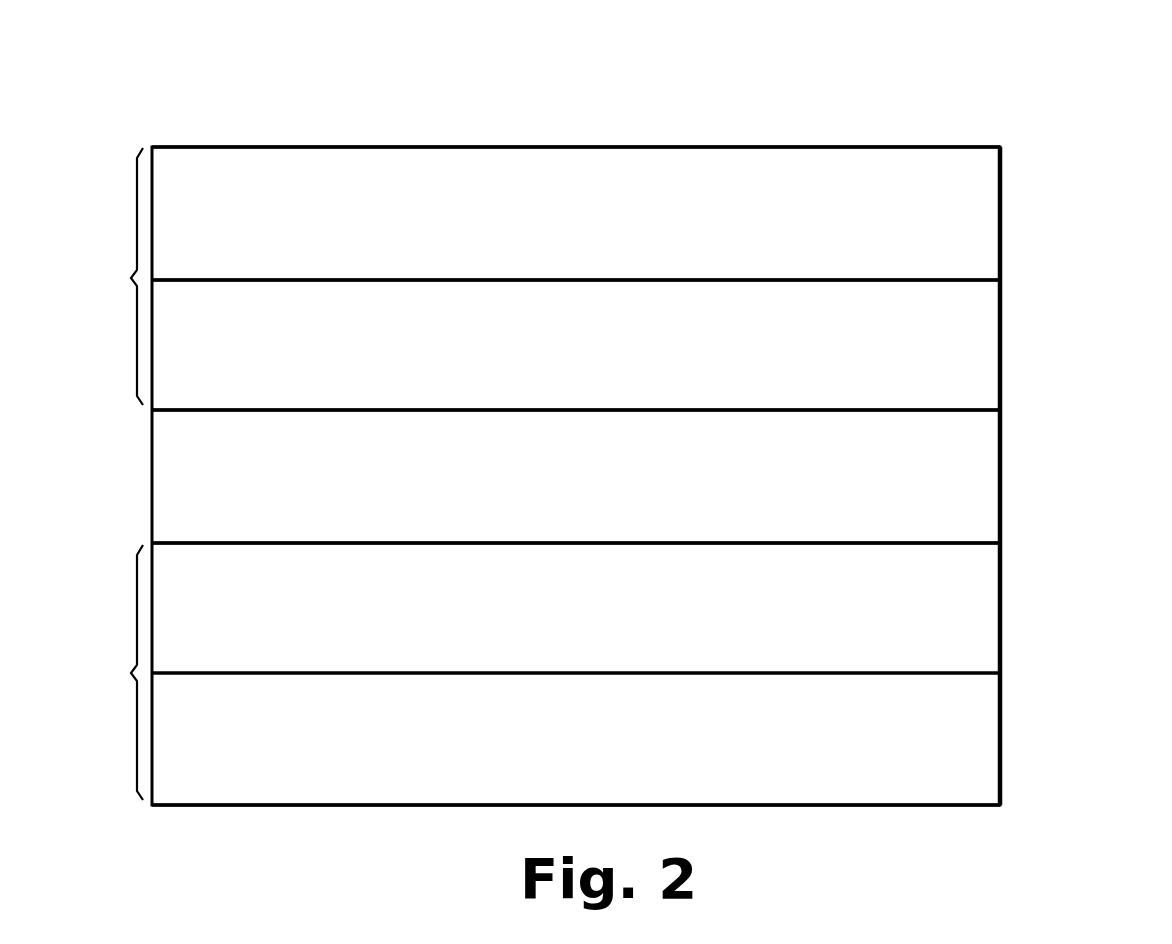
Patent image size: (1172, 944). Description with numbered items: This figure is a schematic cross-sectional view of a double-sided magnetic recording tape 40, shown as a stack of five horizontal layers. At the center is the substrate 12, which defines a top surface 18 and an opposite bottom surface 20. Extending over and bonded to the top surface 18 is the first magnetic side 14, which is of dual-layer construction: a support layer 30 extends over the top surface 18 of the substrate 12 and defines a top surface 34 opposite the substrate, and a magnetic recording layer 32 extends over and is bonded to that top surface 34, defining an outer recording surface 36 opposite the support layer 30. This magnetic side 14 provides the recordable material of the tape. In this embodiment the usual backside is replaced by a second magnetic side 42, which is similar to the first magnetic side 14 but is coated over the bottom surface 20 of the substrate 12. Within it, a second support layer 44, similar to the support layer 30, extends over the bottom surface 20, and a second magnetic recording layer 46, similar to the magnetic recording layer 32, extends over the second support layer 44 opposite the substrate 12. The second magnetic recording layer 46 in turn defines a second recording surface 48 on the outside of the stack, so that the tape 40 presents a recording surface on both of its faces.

The magnetic recording tape 40 is at (1068, 108).
The substrate 12 is at (600, 499).
The magnetic side 14 is at (118, 276).
The support layer 30 is at (600, 359).
The magnetic recording layer 32 is at (600, 229).
The top surface of support layer 34 is at (968, 280).
The recording surface 36 is at (938, 147).
The top surface of substrate 18 is at (968, 410).
The bottom surface of substrate 20 is at (955, 543).
The second magnetic side 42 is at (117, 672).
The second support layer 44 is at (600, 631).
The second magnetic recording layer 46 is at (600, 752).
The second recording surface 48 is at (888, 807).